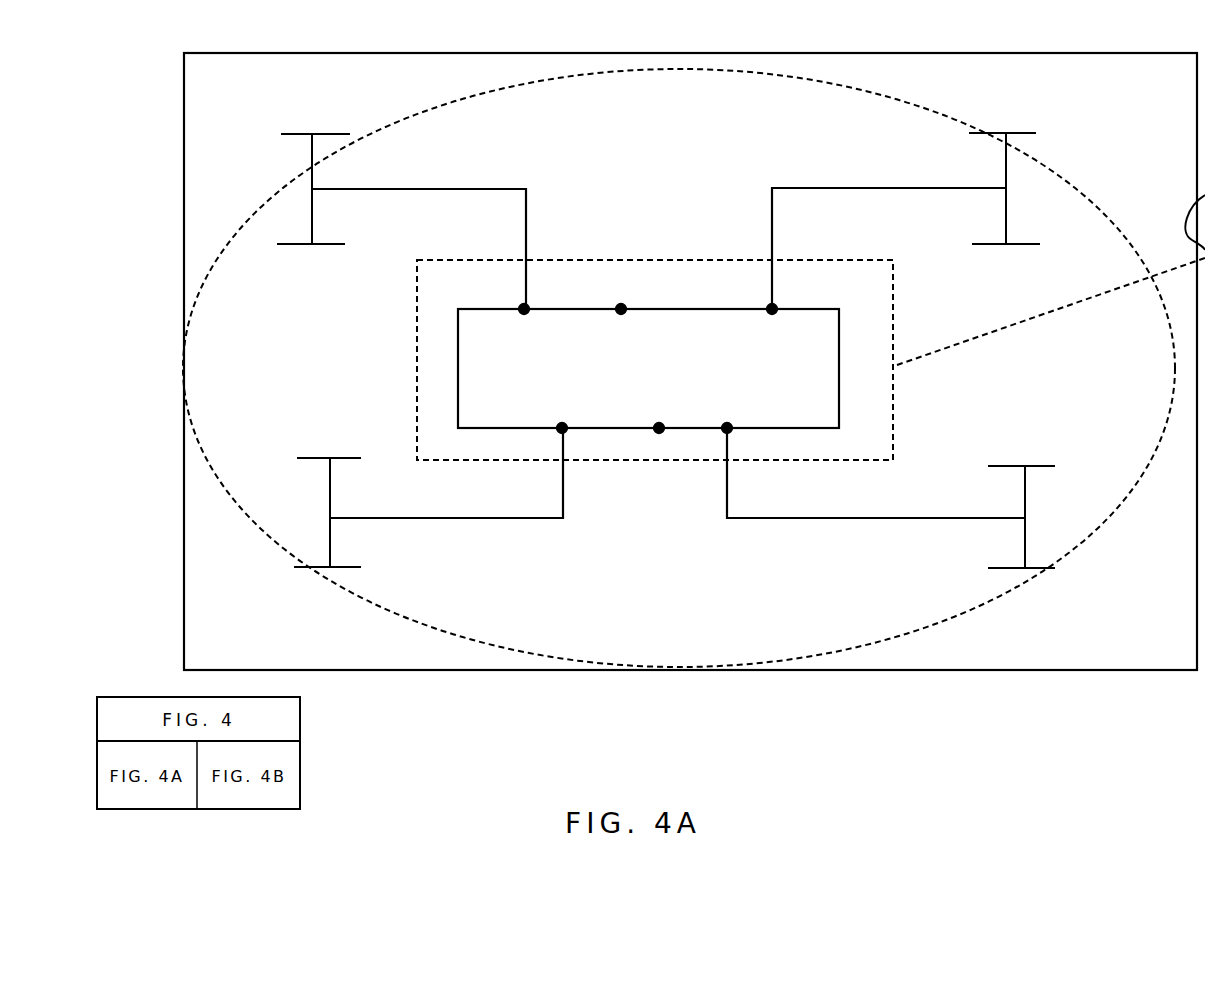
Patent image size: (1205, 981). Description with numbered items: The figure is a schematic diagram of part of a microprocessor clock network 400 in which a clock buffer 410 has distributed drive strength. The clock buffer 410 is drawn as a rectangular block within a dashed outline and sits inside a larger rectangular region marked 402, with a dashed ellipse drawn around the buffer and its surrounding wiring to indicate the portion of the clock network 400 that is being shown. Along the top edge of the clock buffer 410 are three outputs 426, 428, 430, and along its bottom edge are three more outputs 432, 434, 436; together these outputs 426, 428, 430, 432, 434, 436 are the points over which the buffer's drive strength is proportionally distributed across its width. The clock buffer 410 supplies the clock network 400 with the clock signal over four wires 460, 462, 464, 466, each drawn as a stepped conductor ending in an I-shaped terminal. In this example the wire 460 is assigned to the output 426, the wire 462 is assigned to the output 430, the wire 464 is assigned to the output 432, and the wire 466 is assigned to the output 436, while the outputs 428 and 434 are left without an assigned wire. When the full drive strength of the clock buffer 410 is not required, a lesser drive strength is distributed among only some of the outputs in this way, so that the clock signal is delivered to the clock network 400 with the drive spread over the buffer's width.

The microprocessor clock network 400 is at (210, 194).
The substrate 402 is at (1173, 657).
The clock buffer 410 is at (826, 422).
The output 426 is at (522, 307).
The output 428 is at (624, 307).
The output 430 is at (775, 307).
The output 432 is at (560, 431).
The output 434 is at (657, 431).
The output 436 is at (729, 431).
The wire 460 is at (407, 189).
The wire 462 is at (808, 188).
The wire 464 is at (532, 518).
The wire 466 is at (917, 518).